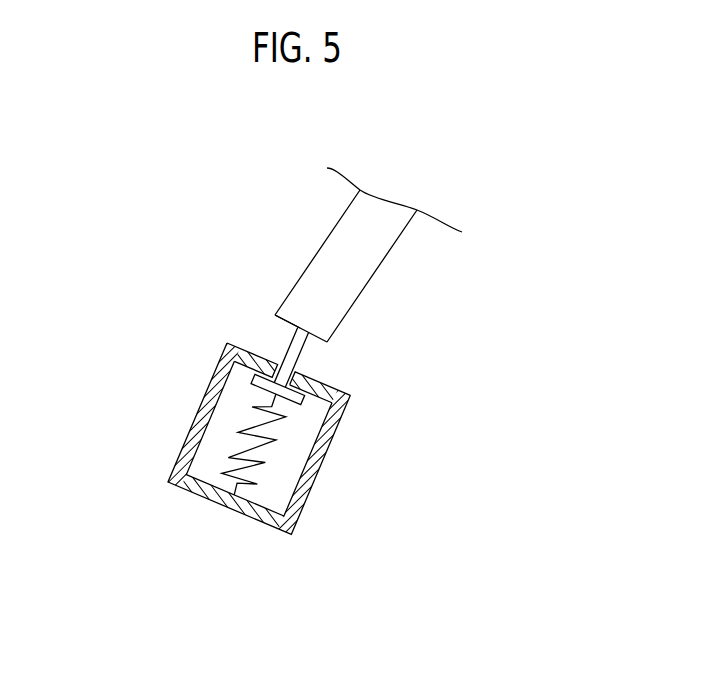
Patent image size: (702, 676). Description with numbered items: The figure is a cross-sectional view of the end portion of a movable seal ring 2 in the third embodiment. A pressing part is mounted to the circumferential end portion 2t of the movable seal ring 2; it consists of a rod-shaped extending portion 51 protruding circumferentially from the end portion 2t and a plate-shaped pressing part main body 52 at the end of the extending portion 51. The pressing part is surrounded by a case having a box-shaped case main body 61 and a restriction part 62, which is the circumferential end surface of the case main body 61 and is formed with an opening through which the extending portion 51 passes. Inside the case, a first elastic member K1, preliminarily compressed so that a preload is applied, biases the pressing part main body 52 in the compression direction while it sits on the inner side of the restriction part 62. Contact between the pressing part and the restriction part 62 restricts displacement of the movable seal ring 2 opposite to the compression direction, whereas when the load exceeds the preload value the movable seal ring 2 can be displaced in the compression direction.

The movable seal ring 2 is at (347, 277).
The end portion 2t is at (277, 322).
The extending portion 51 is at (303, 355).
The pressing part main body 52 is at (297, 398).
The case main body 61 is at (202, 408).
The restriction part 62 is at (263, 355).
The first elastic member K1 is at (263, 453).